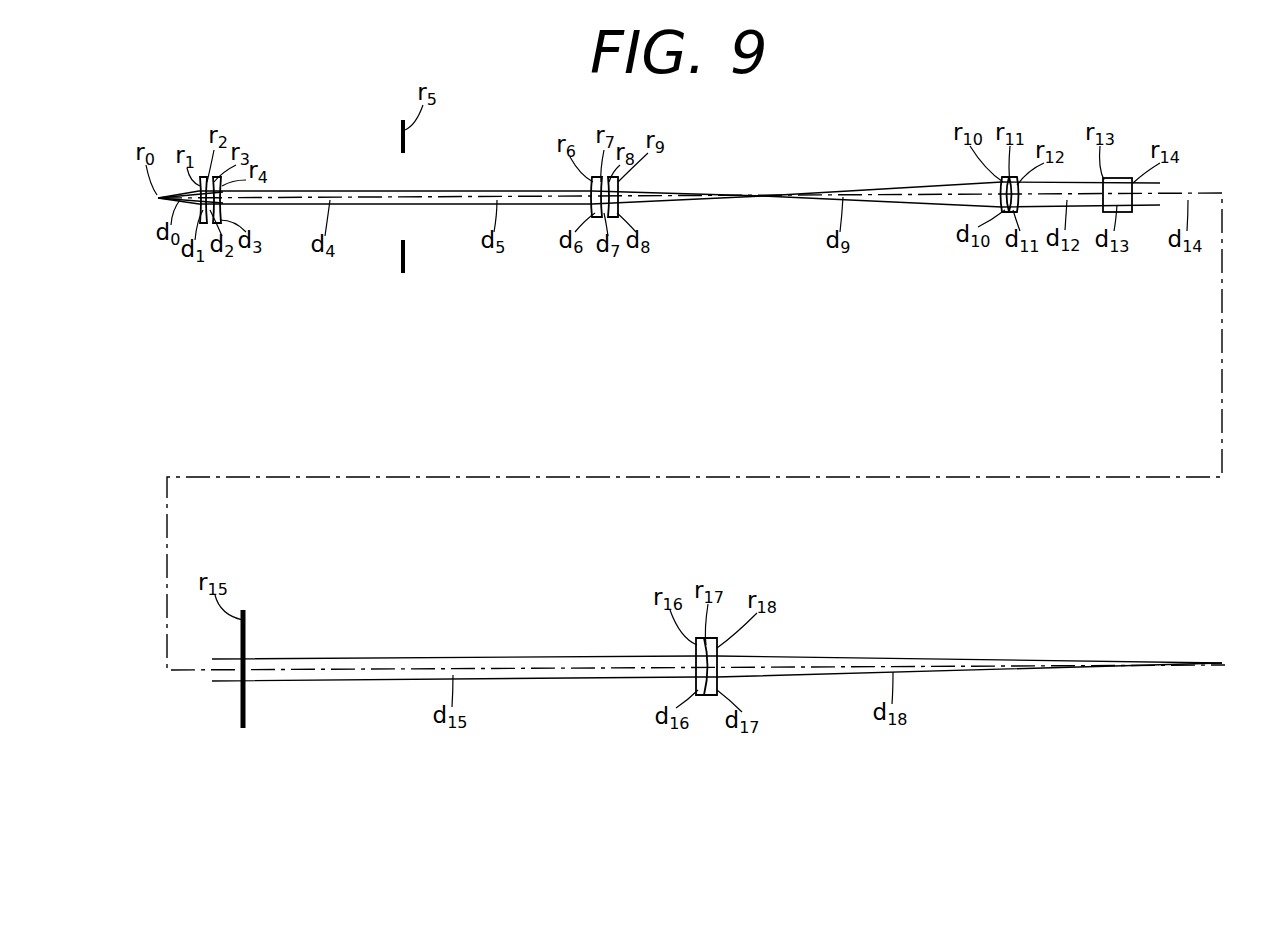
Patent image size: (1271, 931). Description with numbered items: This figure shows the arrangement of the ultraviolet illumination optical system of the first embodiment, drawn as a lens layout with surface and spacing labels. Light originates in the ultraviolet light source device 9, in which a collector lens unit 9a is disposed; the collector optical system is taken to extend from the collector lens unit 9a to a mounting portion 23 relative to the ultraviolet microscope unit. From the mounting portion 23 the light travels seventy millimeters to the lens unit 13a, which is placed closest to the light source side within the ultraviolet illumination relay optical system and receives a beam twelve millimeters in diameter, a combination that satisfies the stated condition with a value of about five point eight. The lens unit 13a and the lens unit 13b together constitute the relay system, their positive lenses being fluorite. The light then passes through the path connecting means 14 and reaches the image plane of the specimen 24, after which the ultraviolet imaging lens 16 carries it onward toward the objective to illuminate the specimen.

The ultraviolet light source device 9 is at (280, 299).
The collector lens unit 9a is at (211, 261).
The mounting portion 23 is at (403, 270).
The lens unit 13a is at (577, 367).
The lens unit 13b is at (997, 367).
The path connecting means 14 is at (1133, 367).
The image plane of the specimen 24 is at (242, 727).
The ultraviolet imaging lens 16 is at (682, 788).